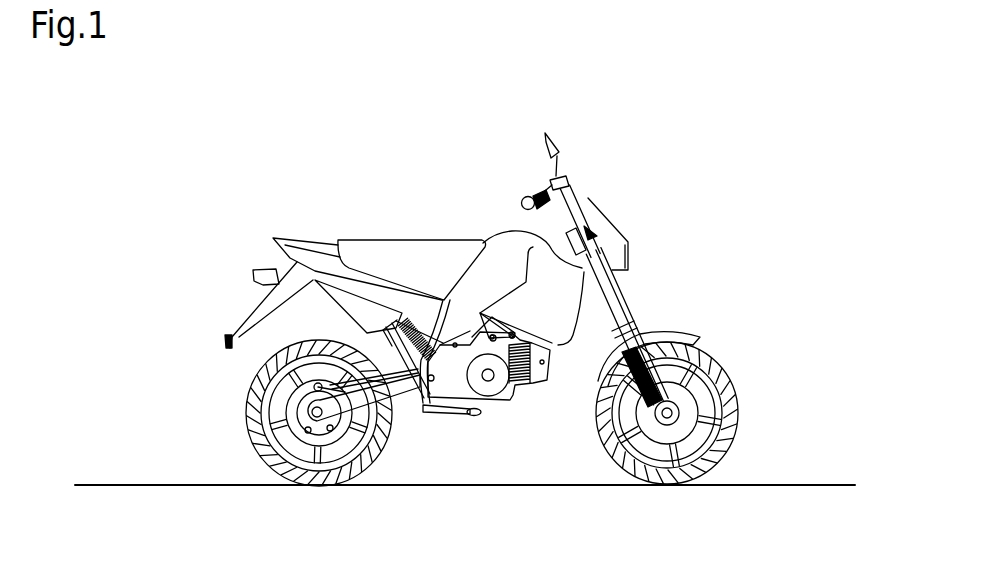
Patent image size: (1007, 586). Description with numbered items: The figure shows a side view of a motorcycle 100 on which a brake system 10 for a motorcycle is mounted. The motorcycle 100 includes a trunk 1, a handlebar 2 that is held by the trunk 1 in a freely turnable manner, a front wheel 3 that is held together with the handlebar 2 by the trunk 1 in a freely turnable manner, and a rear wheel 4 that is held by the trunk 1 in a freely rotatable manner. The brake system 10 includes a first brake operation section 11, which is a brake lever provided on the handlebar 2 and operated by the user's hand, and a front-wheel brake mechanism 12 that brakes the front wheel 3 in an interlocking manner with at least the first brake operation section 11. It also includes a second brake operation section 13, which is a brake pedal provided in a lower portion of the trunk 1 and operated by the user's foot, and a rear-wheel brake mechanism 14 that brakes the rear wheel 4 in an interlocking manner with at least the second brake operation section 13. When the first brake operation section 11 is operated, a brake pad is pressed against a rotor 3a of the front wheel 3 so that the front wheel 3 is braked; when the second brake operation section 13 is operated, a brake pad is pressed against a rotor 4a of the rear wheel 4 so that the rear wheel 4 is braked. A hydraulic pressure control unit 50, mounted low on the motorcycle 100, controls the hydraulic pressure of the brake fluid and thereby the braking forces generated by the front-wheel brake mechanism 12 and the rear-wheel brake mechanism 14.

The motorcycle 100 is at (732, 105).
The trunk 1 is at (430, 272).
The handlebar 2 is at (524, 198).
The front wheel 3 is at (741, 426).
The rotor 3a is at (693, 410).
The rear wheel 4 is at (237, 435).
The rotor 4a is at (297, 414).
The brake system 10 is at (660, 307).
The first brake operation section 11 is at (575, 198).
The front-wheel brake mechanism 12 is at (682, 368).
The second brake operation section 13 is at (447, 383).
The rear-wheel brake mechanism 14 is at (277, 393).
The hydraulic pressure control unit 50 is at (423, 409).